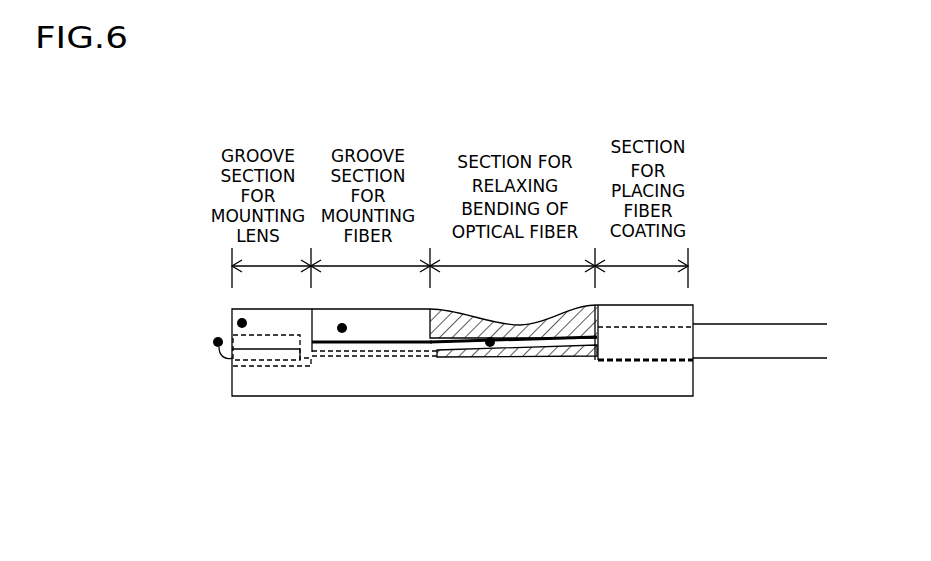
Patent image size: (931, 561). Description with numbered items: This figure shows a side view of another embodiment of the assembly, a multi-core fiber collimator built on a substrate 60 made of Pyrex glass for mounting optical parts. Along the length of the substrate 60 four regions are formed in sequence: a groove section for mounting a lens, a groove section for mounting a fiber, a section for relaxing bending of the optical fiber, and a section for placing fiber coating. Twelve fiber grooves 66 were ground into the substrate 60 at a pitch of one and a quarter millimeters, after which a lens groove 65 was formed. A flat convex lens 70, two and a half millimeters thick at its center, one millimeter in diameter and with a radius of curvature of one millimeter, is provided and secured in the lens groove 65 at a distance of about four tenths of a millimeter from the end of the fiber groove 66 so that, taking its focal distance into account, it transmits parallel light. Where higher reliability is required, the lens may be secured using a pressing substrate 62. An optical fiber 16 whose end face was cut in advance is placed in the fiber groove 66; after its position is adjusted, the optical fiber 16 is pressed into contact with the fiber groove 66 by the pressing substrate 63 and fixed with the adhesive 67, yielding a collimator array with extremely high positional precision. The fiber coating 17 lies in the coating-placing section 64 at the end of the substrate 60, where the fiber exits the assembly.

The optical fiber 16 is at (490, 342).
The fiber coating 17 is at (725, 343).
The substrate 60 is at (555, 385).
The pressing substrate 62 is at (242, 323).
The pressing substrate 63 is at (342, 328).
The fiber coating placing section 64 is at (683, 315).
The lens groove 65 is at (272, 367).
The fiber groove 66 is at (388, 362).
The adhesive 67 is at (560, 327).
The flat convex lens 70 is at (138, 382).